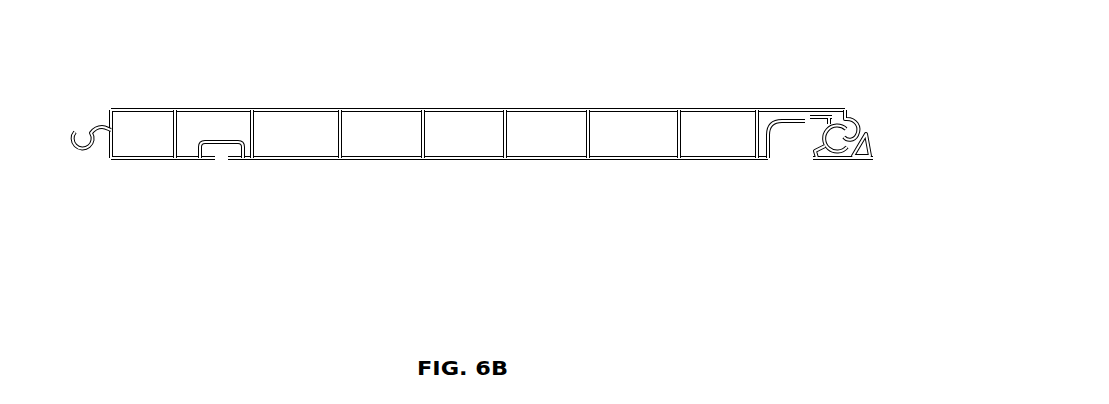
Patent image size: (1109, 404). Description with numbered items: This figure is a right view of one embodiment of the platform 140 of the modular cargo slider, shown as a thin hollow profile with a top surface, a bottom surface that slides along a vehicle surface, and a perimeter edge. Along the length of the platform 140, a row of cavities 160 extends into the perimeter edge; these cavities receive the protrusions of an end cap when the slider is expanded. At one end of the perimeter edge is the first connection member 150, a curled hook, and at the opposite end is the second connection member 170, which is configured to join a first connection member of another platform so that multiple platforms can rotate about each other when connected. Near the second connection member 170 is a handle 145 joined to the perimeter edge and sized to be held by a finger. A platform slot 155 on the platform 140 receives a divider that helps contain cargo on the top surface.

The platform 140 is at (662, 267).
The handle 145 is at (795, 175).
The first connection member 150 is at (90, 108).
The platform slot 155 is at (228, 177).
The cavity 160 is at (387, 140).
The second connection member 170 is at (872, 113).